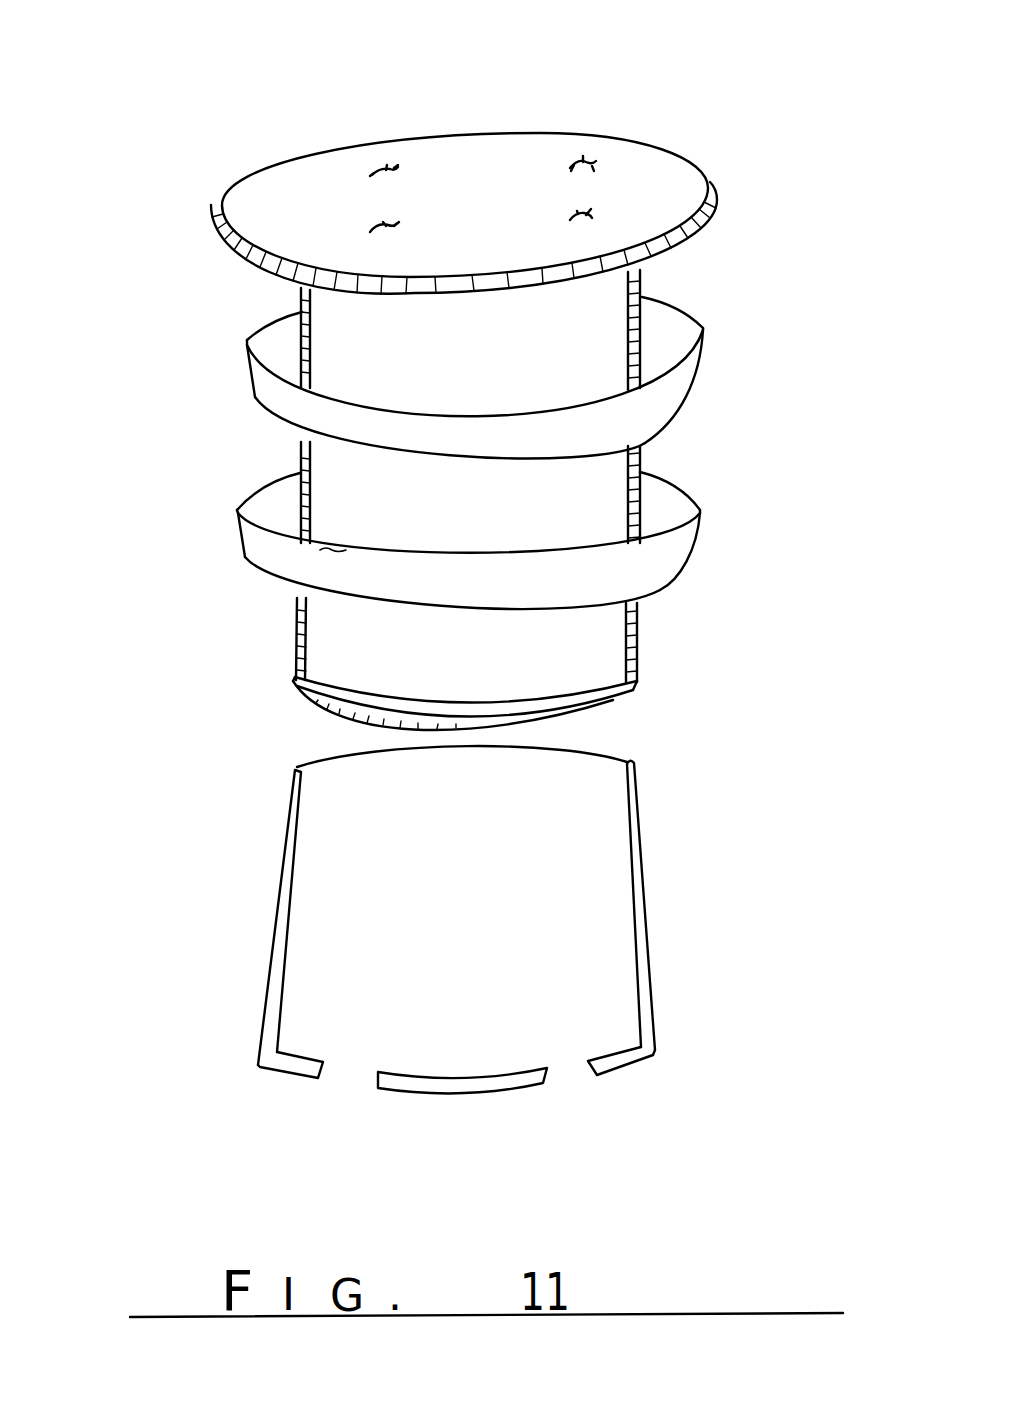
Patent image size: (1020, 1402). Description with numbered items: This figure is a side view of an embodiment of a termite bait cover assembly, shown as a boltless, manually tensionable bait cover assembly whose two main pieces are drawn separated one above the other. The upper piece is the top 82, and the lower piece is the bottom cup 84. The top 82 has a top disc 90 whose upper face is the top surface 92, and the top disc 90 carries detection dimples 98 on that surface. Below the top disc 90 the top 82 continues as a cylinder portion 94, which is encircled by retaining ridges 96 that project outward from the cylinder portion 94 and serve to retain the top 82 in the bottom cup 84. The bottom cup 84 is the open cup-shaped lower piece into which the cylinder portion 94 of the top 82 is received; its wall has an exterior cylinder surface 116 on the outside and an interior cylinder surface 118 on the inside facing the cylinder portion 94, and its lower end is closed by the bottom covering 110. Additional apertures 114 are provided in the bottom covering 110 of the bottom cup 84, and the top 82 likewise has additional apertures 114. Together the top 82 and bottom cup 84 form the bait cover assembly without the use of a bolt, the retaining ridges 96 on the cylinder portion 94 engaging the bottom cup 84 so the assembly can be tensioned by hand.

The top 82 is at (162, 370).
The bottom cup 84 is at (150, 882).
The top disc 90 is at (327, 148).
The top surface 92 is at (268, 183).
The cylinder portion 94 is at (298, 463).
The retaining ridges 96 is at (243, 557).
The detection dimples 98 is at (392, 165).
The bottom covering 110 is at (295, 1075).
The additional apertures 114 is at (350, 1075).
The exterior cylinder surface 116 is at (643, 878).
The interior cylinder surface 118 is at (630, 973).